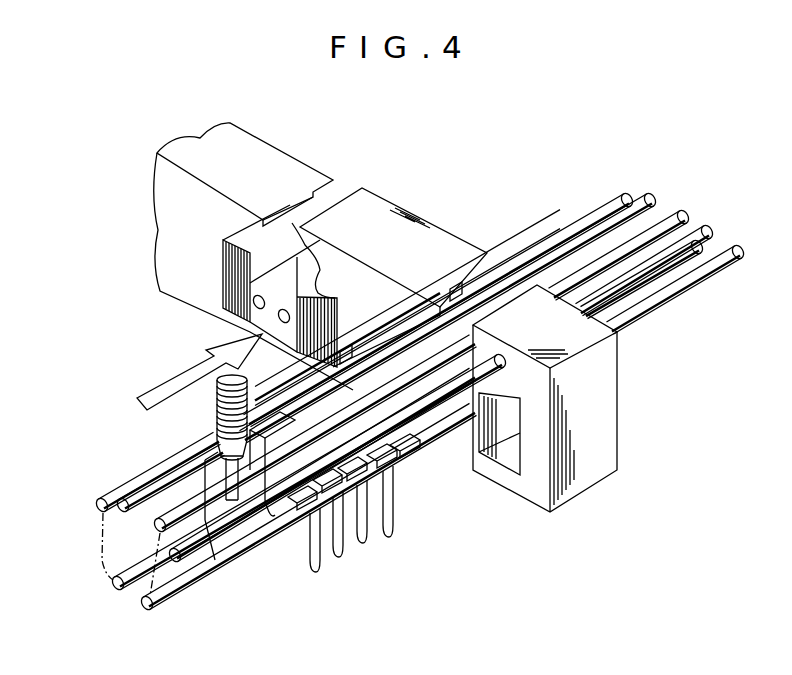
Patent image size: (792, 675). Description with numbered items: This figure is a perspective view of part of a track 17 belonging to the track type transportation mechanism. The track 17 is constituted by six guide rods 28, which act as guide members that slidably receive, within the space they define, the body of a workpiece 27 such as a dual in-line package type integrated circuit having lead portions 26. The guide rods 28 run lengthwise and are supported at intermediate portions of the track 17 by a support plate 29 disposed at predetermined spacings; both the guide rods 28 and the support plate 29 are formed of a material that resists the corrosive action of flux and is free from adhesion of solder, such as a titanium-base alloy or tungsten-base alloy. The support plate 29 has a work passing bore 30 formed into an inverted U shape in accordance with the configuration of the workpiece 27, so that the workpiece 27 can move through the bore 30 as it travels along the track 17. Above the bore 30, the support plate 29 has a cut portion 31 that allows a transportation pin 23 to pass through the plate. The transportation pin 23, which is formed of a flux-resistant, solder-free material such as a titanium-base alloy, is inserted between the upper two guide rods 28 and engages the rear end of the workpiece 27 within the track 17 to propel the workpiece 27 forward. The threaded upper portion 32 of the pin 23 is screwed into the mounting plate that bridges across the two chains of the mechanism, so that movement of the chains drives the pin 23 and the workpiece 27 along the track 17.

The track 17 is at (569, 183).
The transportation pin 23 is at (223, 447).
The lead portions 26 is at (390, 535).
The workpiece 27 is at (274, 515).
The guide rods 28 is at (232, 470).
The support plate 29 is at (533, 490).
The work passing bore 30 is at (503, 458).
The cut portion 31 is at (497, 300).
The threaded upper portion 32 is at (213, 412).